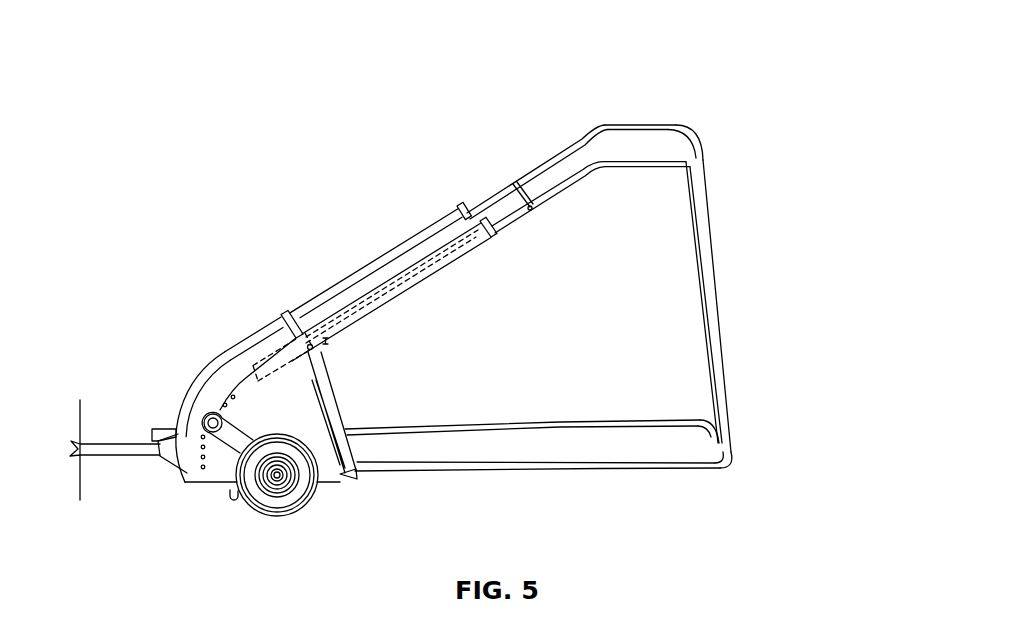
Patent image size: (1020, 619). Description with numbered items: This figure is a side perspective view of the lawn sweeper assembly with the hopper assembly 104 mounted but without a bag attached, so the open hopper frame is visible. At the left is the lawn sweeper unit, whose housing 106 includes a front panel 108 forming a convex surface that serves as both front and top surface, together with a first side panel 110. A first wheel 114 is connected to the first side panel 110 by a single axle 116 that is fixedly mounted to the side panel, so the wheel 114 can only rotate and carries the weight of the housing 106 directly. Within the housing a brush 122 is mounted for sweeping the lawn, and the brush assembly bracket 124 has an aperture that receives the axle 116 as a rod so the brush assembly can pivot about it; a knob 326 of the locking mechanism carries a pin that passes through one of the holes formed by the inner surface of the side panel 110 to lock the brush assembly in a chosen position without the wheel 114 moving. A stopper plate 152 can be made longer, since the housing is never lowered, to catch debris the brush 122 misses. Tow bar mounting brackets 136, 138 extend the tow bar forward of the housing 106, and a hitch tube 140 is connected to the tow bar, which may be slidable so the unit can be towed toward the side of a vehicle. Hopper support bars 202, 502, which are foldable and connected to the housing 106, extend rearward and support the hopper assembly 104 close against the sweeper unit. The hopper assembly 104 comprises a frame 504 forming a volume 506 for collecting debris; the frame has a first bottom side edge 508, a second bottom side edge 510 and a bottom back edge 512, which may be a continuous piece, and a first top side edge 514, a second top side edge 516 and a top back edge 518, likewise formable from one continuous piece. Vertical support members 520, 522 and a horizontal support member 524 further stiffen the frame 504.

The hopper assembly 104 is at (622, 110).
The housing 106 is at (207, 365).
The front panel 108 is at (260, 342).
The first side panel 110 is at (336, 478).
The first wheel 114 is at (313, 487).
The axle 116 is at (280, 480).
The brush 122 is at (233, 500).
The brush assembly bracket 124 is at (225, 433).
The tow bar mounting bracket 136 is at (173, 455).
The tow bar mounting bracket 138 is at (167, 430).
The hitch tube 140 is at (110, 450).
The stopper plate 152 is at (357, 472).
The hopper support bar 202 is at (405, 295).
The knob 326 is at (211, 413).
The hopper support bar 502 is at (402, 258).
The frame 504 is at (747, 174).
The volume 506 is at (504, 207).
The first bottom side edge 508 is at (628, 472).
The second bottom side edge 510 is at (568, 427).
The bottom back edge 512 is at (733, 455).
The first top side edge 514 is at (628, 167).
The second top side edge 516 is at (635, 125).
The top back edge 518 is at (692, 139).
The vertical support member 520 is at (712, 298).
The vertical support member 522 is at (693, 262).
The horizontal support member 524 is at (525, 180).